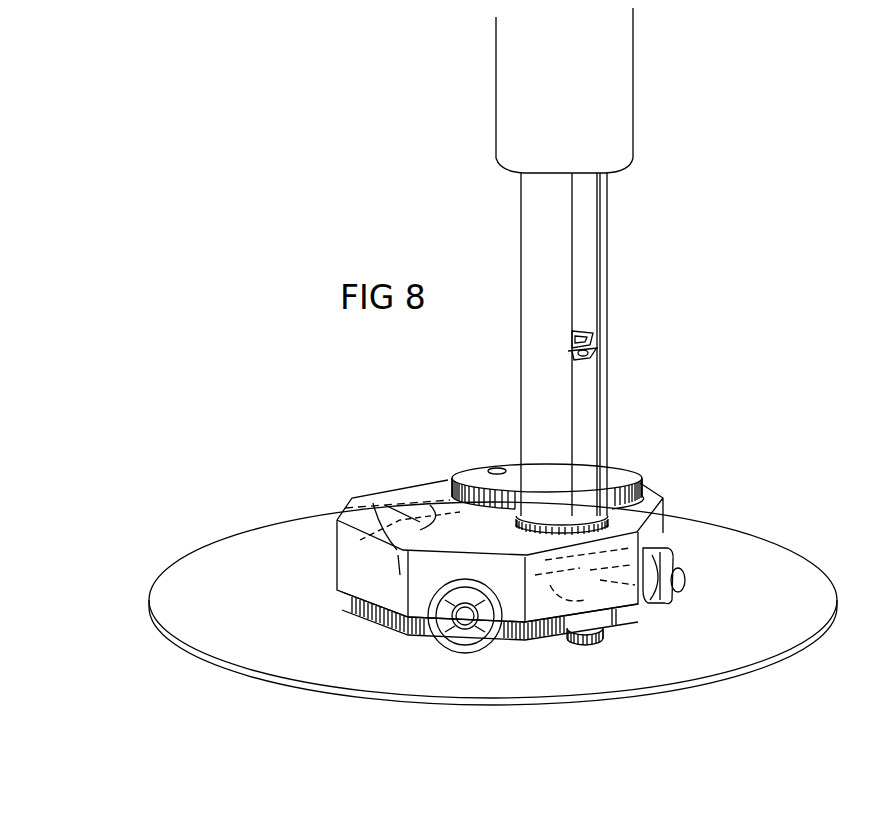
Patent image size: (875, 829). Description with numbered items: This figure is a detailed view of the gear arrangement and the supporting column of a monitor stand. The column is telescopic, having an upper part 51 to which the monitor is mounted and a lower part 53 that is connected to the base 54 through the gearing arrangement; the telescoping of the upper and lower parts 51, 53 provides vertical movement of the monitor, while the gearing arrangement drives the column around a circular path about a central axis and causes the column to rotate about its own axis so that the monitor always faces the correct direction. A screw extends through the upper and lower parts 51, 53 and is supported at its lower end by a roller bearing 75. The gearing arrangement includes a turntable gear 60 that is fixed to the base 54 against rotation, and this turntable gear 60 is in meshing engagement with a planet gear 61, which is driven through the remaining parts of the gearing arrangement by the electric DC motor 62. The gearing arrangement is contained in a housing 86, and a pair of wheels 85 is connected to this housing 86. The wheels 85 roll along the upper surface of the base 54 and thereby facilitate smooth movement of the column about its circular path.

The upper part 51 is at (610, 85).
The lower part 53 is at (600, 256).
The roller bearing 75 is at (593, 352).
The housing 86 is at (420, 490).
The electric DC motor 62 is at (375, 498).
The turntable gear 60 is at (360, 612).
The base 54 is at (330, 673).
The wheels 85 is at (462, 643).
The planet gear 61 is at (597, 640).